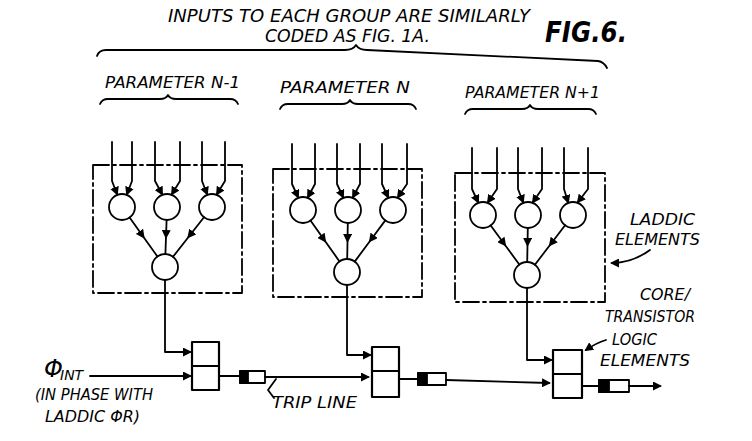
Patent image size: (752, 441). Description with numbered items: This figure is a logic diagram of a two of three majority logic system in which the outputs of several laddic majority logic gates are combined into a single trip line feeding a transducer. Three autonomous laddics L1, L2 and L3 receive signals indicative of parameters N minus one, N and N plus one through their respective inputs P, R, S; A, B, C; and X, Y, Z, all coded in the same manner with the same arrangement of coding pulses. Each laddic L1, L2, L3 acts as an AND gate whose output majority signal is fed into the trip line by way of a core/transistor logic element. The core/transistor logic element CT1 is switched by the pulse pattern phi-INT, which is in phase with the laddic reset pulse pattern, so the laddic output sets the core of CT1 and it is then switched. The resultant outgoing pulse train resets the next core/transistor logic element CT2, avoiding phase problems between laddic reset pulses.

The laddic L1 is at (102, 251).
The laddic L2 is at (287, 238).
The laddic L3 is at (470, 261).
The core/transistor logic element CT1 is at (219, 352).
The core/transistor logic element CT2 is at (399, 358).